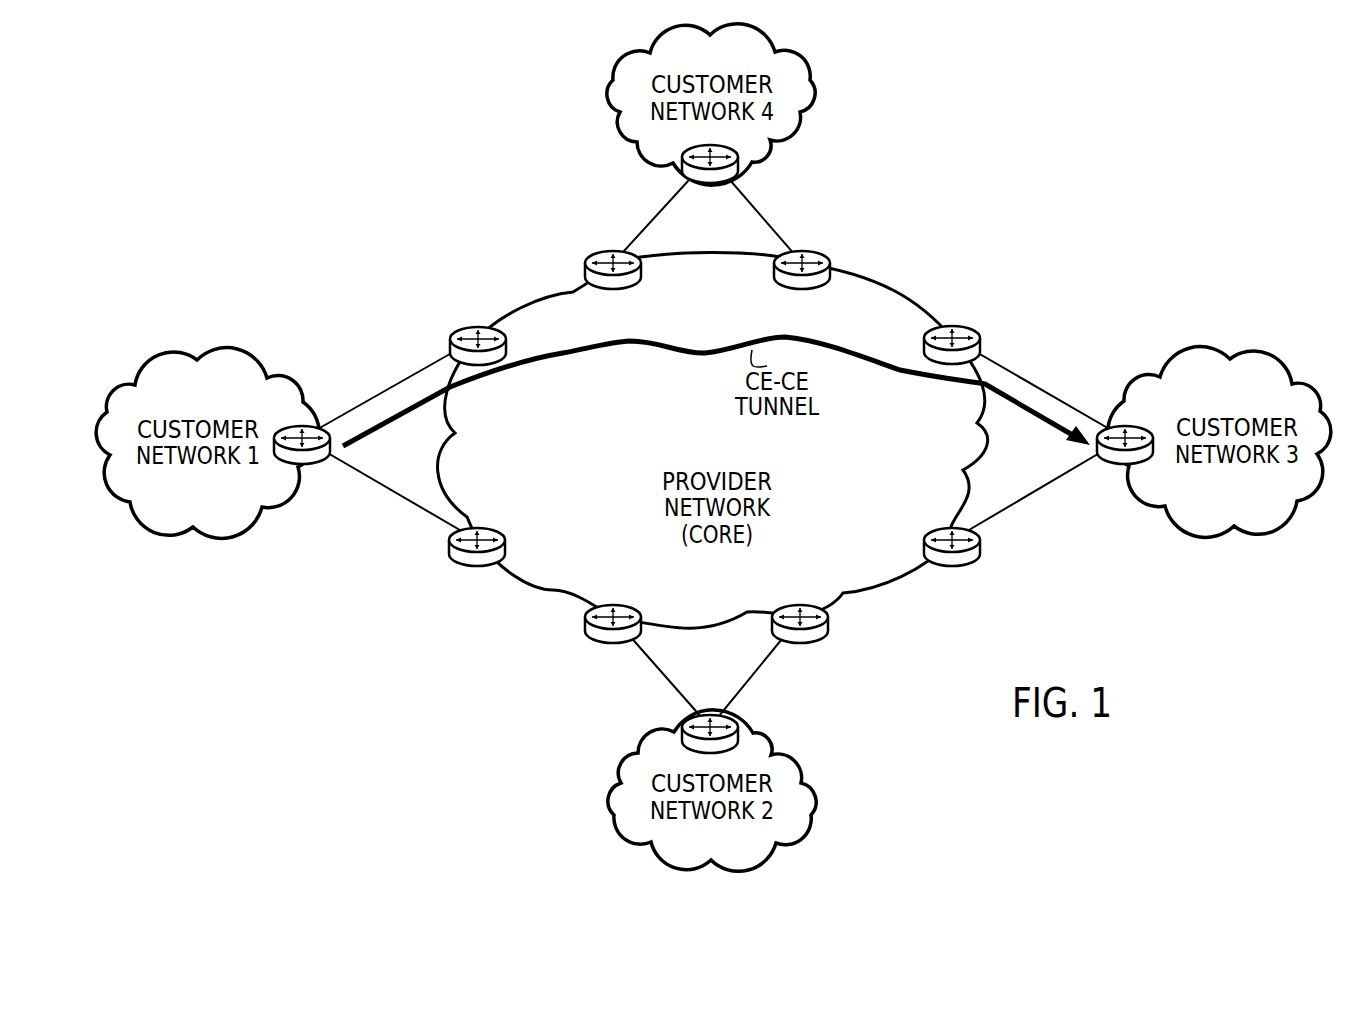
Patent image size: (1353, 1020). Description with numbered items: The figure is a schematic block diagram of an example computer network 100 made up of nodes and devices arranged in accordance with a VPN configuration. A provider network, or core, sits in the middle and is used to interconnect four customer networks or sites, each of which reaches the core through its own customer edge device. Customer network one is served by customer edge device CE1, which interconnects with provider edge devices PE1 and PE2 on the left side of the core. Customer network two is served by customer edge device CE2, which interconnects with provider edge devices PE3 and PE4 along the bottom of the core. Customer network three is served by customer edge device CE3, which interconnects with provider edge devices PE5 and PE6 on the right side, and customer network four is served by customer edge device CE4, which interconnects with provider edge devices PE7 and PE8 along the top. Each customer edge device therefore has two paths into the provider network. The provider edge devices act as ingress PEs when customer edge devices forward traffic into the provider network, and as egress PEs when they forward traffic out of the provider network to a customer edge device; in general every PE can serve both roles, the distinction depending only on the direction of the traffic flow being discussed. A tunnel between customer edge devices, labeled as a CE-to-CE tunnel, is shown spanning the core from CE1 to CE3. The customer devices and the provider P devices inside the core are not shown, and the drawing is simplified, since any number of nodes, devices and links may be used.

The computer network 100 is at (1037, 195).
The customer edge device CE1 is at (316, 424).
The customer edge device CE2 is at (712, 714).
The customer edge device CE3 is at (1110, 424).
The customer edge device CE4 is at (712, 185).
The provider edge device PE1 is at (470, 326).
The provider edge device PE2 is at (469, 568).
The provider edge device PE3 is at (586, 636).
The provider edge device PE4 is at (812, 646).
The provider edge device PE5 is at (952, 565).
The provider edge device PE6 is at (974, 326).
The provider edge device PE7 is at (828, 257).
The provider edge device PE8 is at (585, 264).